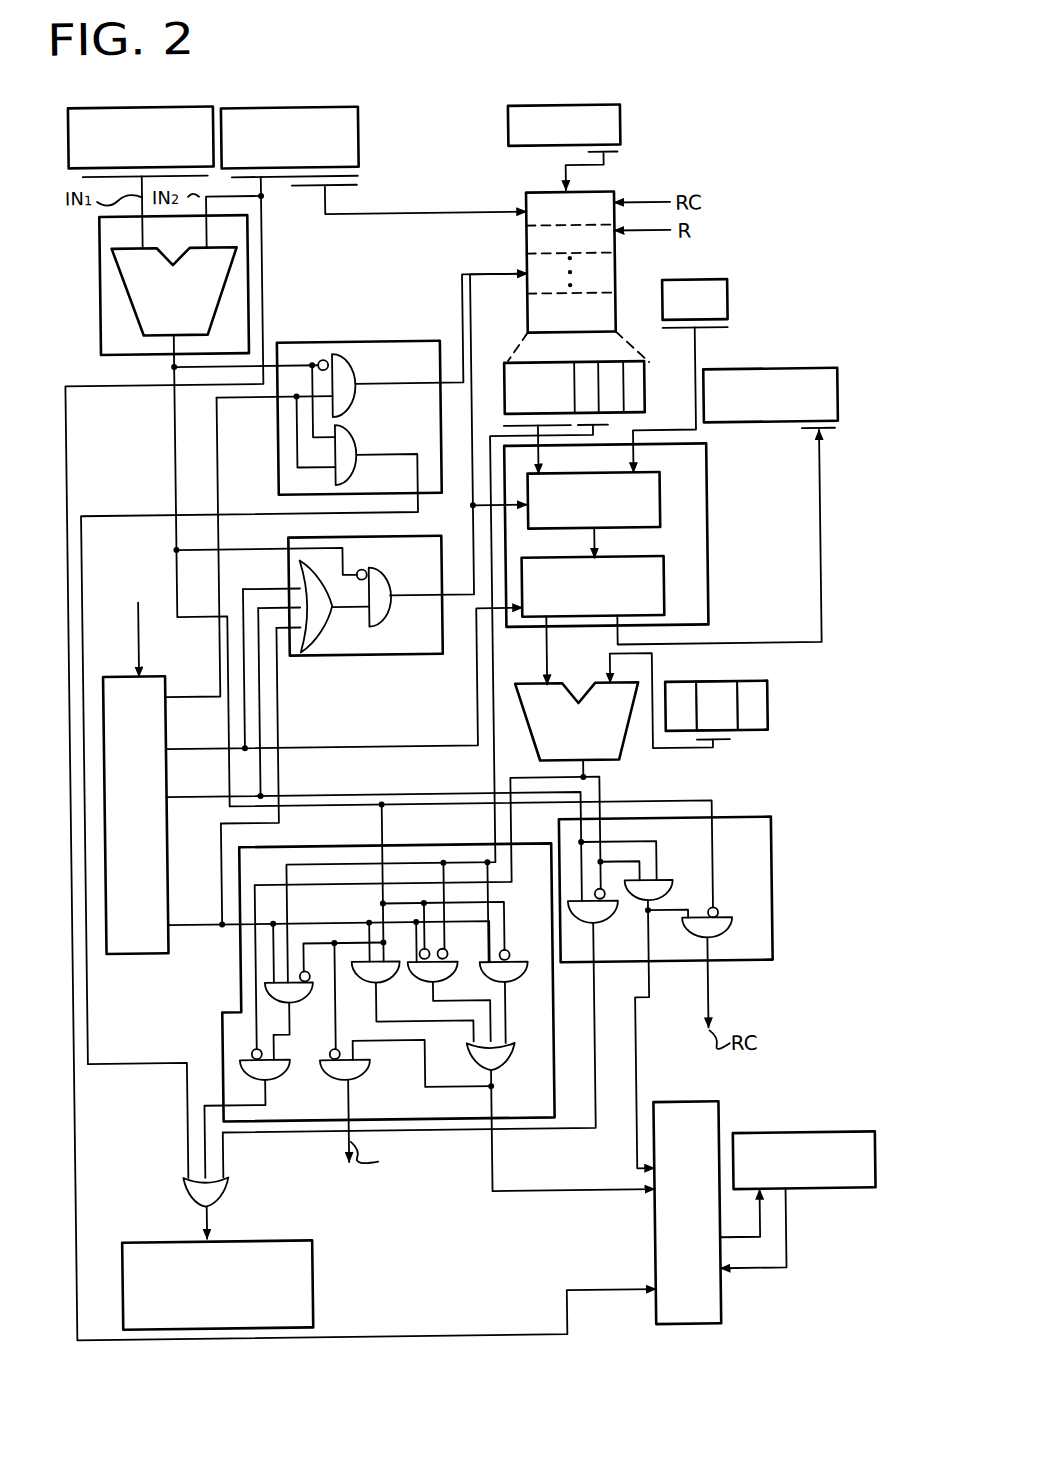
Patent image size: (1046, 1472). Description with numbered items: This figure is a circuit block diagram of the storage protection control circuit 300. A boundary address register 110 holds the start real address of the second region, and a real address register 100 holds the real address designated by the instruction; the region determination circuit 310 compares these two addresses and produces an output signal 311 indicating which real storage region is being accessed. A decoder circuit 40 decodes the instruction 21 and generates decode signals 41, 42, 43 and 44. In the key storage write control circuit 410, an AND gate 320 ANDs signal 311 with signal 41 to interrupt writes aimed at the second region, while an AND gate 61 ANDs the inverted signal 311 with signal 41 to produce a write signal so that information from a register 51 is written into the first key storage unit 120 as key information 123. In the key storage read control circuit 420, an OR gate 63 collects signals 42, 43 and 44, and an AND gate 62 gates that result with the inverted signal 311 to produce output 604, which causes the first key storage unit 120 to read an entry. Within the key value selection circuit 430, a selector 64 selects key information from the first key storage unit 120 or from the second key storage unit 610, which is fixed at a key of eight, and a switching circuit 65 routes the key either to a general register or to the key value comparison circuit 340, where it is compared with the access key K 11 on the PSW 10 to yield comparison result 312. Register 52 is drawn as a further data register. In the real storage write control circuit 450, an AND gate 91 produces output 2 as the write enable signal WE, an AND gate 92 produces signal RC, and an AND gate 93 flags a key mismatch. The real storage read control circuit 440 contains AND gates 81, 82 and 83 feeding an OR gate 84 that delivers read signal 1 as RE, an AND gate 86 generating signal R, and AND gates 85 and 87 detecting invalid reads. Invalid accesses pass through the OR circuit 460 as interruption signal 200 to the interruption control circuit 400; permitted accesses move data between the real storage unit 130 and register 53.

The storage protection control circuit 300 is at (370, 46).
The boundary address register 110 is at (143, 104).
The real address register 100 is at (293, 105).
The region determination circuit 310 is at (254, 276).
The output signal 311 is at (177, 462).
The output of AND gate 604 is at (474, 537).
The key storage write control circuit 410 is at (308, 340).
The AND gate 61 is at (362, 364).
The AND gate 320 is at (361, 434).
The key storage read control circuit 420 is at (330, 657).
The AND gate 62 is at (394, 586).
The OR gate 63 is at (334, 628).
The decoder circuit 40 is at (129, 952).
The instruction 21 is at (140, 620).
The decode signal 41 is at (176, 692).
The decode signal 42 is at (176, 744).
The decode signal 43 is at (178, 917).
The decode signal 44 is at (176, 792).
The register 51 is at (553, 103).
The first key storage unit 120 is at (599, 192).
The key information 123 is at (653, 392).
The second key storage unit 610 is at (694, 281).
The general register 52 is at (740, 374).
The key value selection circuit 430 is at (711, 548).
The selector 64 is at (665, 492).
The switching circuit 65 is at (668, 592).
The key value comparison circuit 340 is at (537, 682).
The PSW 10 is at (738, 697).
The key value K 11 is at (712, 684).
The comparison result 312 is at (600, 790).
The real storage write control circuit 450 is at (770, 908).
The AND gate 91 is at (664, 882).
The AND gate 92 is at (732, 932).
The AND gate 93 is at (603, 926).
The output 2 is at (634, 1103).
The read signal RE 1 is at (557, 1195).
The real storage read control circuit 440 is at (311, 1122).
The AND gate 81 is at (522, 983).
The AND gate 82 is at (466, 992).
The AND gate 83 is at (395, 982).
The OR gate 84 is at (500, 1072).
The AND gate 85 is at (300, 1003).
The AND gate 86 is at (356, 1080).
The AND gate 87 is at (278, 1080).
The OR circuit 460 is at (225, 1193).
The interruption signal 200 is at (200, 1222).
The interruption control circuit 400 is at (220, 1235).
The real storage unit 130 is at (716, 1290).
The register 53 is at (794, 1194).